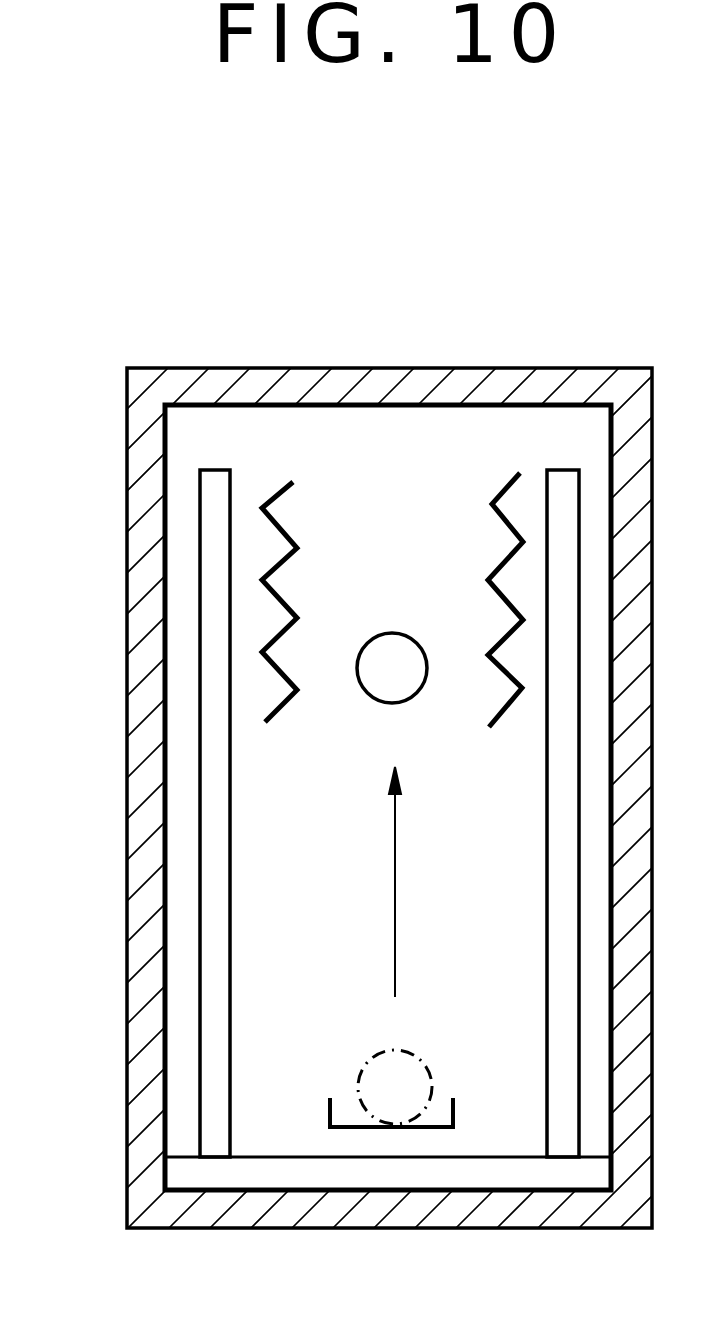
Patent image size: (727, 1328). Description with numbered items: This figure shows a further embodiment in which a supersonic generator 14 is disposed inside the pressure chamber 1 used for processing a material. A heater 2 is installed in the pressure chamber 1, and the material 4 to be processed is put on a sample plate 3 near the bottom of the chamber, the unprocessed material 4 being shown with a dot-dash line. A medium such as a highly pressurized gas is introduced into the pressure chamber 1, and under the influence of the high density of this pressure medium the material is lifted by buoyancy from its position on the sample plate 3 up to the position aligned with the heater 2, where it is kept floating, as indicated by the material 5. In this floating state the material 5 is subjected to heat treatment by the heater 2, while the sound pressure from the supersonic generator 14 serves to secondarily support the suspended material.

The pressure chamber 1 is at (137, 490).
The heater 2 is at (297, 690).
The sample plate 3 is at (327, 1108).
The material 4 is at (410, 1082).
The material 5 is at (402, 660).
The supersonic generator 14 is at (213, 943).